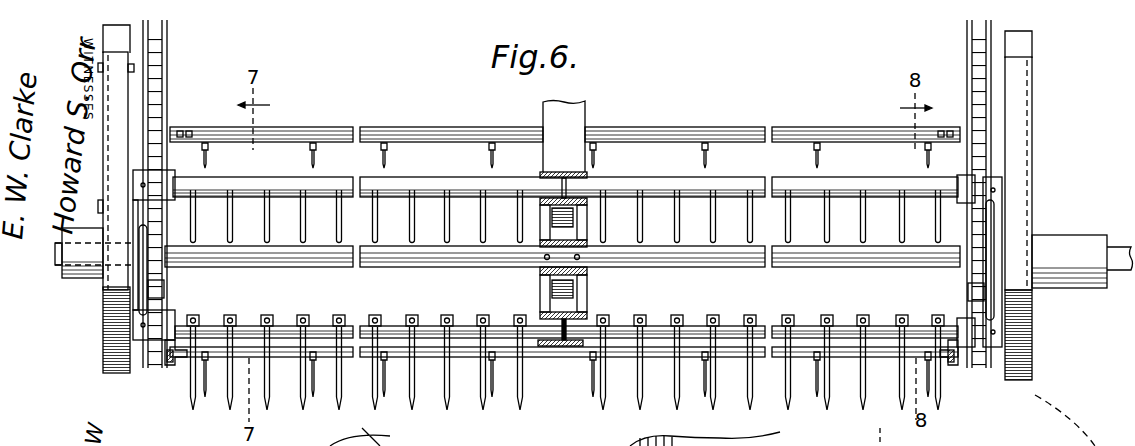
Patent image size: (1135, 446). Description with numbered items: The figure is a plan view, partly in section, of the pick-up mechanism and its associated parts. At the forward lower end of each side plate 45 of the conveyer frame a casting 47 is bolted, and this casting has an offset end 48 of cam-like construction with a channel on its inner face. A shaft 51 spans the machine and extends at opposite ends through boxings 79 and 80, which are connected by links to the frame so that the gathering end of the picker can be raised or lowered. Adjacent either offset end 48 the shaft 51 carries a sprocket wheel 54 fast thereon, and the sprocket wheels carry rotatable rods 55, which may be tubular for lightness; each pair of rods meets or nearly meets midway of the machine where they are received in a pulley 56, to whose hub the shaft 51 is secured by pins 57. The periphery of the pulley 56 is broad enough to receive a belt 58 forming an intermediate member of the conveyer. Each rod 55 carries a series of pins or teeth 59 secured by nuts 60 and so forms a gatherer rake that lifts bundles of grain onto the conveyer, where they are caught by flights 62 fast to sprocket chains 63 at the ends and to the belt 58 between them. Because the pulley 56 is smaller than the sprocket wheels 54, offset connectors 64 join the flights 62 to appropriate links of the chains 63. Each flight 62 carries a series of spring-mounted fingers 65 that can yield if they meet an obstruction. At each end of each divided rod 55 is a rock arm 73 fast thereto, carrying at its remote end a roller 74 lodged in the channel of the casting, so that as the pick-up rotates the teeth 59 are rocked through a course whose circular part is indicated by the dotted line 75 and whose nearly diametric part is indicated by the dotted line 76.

The side plate 45 is at (125, 38).
The casting 47 is at (118, 189).
The offset end 48 is at (103, 348).
The shaft 51 is at (322, 262).
The sprocket wheel 54 is at (164, 290).
The rotatable rod 55 is at (430, 178).
The pulley 56 is at (587, 293).
The pin 57 is at (579, 256).
The belt 58 is at (580, 112).
The pins or teeth 59 is at (302, 226).
The nut 60 is at (414, 318).
The flight 62 is at (667, 127).
The sprocket chain 63 is at (166, 99).
The offset connector 64 is at (178, 365).
The finger 65 is at (384, 153).
The rock arm 73 is at (1043, 307).
The roller 74 is at (133, 233).
The dotted line 75 is at (1093, 445).
The dotted line 76 is at (878, 440).
The boxing 79 is at (89, 277).
The boxing 80 is at (1058, 244).